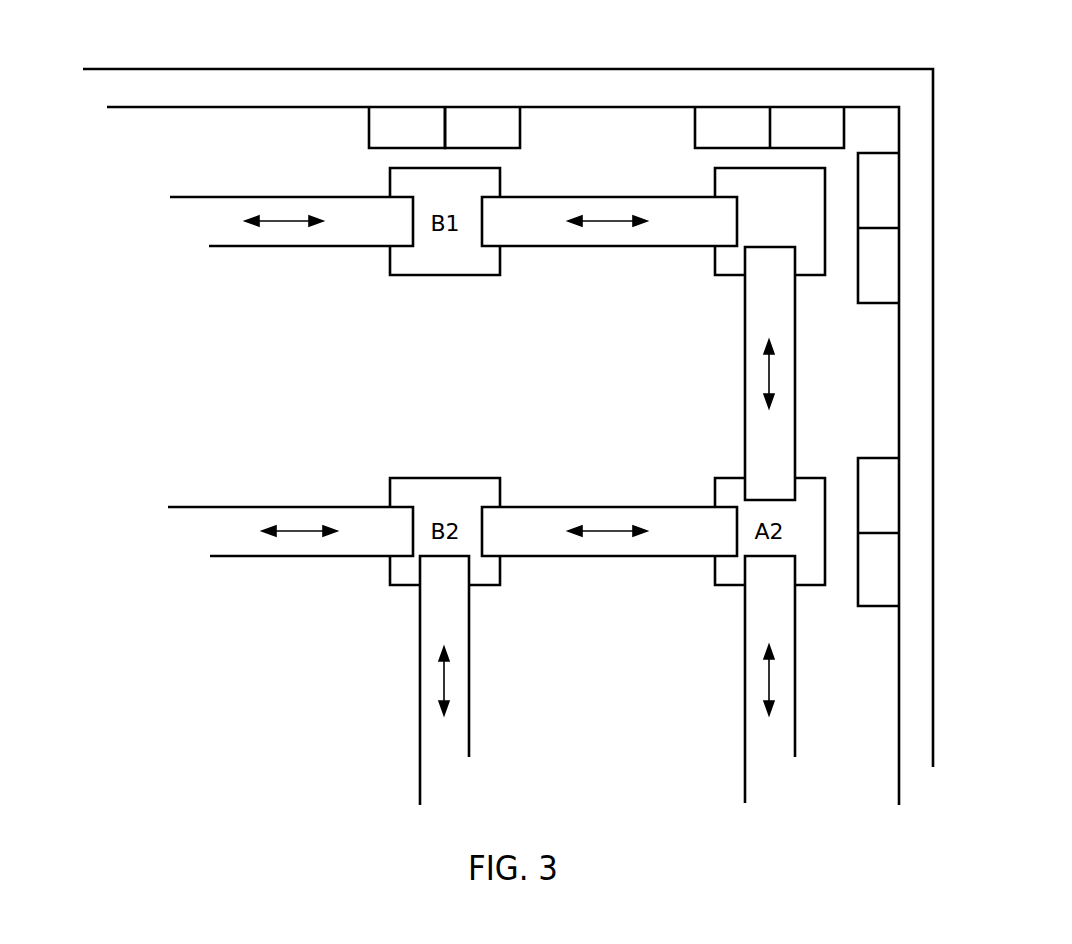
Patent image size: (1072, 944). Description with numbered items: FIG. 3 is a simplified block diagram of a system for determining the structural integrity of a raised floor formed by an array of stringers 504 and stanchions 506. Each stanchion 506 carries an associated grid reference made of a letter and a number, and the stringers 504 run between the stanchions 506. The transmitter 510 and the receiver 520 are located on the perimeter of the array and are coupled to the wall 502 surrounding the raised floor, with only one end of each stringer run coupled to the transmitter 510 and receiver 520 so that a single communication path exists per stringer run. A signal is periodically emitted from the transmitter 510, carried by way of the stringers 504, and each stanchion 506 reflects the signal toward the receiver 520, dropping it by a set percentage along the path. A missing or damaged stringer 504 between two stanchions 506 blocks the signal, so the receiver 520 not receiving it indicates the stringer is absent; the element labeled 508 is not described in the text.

The wall 502 is at (933, 501).
The stringer 504 is at (795, 633).
The stanchion 506 is at (825, 208).
The connecting rod 508 is at (795, 258).
The transmitter 510 is at (407, 107).
The receiver 520 is at (479, 107).